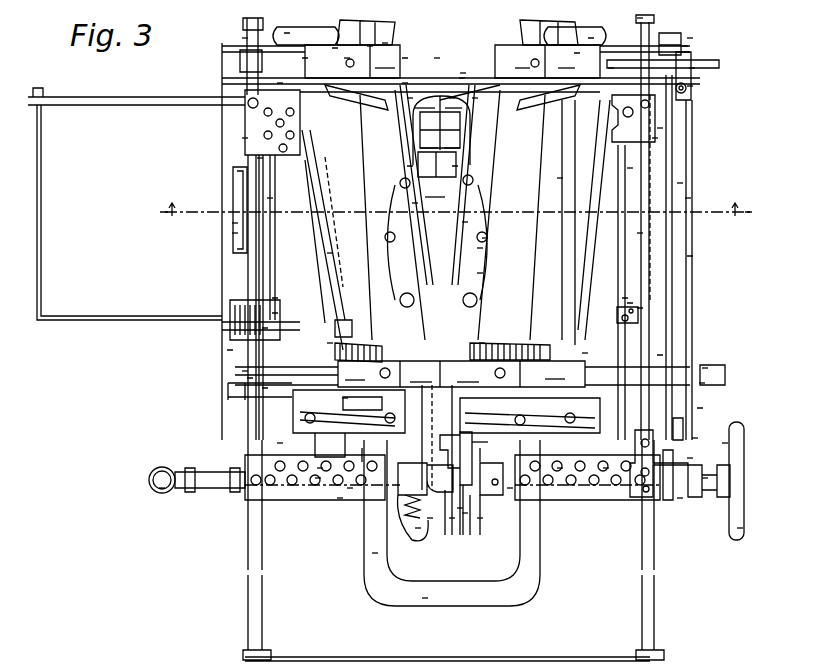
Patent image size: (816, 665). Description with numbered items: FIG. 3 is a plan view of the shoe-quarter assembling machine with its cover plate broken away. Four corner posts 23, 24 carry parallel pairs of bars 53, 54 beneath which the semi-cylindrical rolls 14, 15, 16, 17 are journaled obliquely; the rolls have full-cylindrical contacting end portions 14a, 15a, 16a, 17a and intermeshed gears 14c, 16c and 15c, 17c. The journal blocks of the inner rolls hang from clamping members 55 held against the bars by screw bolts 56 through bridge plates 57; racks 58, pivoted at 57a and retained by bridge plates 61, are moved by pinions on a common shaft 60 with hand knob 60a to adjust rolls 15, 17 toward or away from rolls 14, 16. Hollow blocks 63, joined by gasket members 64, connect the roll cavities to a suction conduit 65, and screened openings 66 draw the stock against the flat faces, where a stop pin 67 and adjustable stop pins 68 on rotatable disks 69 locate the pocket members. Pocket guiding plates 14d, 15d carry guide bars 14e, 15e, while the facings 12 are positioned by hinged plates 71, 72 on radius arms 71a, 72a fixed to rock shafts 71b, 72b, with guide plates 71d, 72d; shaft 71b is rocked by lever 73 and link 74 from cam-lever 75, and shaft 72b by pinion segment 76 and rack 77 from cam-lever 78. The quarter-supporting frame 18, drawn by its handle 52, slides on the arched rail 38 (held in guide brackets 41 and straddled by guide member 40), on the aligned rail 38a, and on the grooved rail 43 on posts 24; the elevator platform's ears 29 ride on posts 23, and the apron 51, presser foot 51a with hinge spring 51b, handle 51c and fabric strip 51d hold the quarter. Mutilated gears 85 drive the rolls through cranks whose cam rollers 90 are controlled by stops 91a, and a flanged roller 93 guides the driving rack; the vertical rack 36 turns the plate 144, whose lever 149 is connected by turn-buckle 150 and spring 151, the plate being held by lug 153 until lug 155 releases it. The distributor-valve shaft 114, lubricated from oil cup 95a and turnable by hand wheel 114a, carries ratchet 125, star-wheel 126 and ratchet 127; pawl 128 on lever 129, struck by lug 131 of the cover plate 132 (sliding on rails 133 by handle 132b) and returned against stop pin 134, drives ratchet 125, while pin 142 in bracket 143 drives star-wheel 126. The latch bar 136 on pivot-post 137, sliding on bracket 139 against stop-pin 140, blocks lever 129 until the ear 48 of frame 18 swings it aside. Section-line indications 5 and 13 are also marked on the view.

The section line 5 is at (450, 211).
The facings 12 is at (367, 458).
The section line 13 is at (487, 458).
The pocket manipulating roll 14 is at (410, 100).
The full-cylindrical end portion 14a is at (405, 85).
The gear 14c is at (422, 376).
The pocket supporting and guiding plate 14d is at (437, 60).
The guide bar 14e is at (415, 205).
The pocket manipulating roll 15 is at (475, 100).
The full-cylindrical end portion 15a is at (482, 345).
The gear 15c is at (469, 376).
The pocket supporting and guiding plate 15d is at (463, 75).
The guide bar 15e is at (465, 224).
The roll 16 is at (260, 160).
The full-cylindrical end portion 16a is at (290, 352).
The gear 16c is at (357, 374).
The roll 17 is at (688, 200).
The full-cylindrical end portion 17a is at (585, 355).
The gear 17c is at (557, 373).
The vertically movable frame 18 is at (630, 170).
The corner posts 23 is at (245, 373).
The corner posts 24 is at (685, 48).
The perforate ears 29 is at (230, 352).
The vertical rack 36 is at (350, 490).
The arched rail 38 is at (275, 315).
The rail 38a is at (75, 320).
The guide member 40 is at (275, 300).
The guide brackets 41 is at (265, 330).
The grooved rail 43 is at (100, 100).
The ear or bracket 48 is at (660, 130).
The non-sticking shield or apron 51 is at (421, 119).
The presser foot 51a is at (437, 191).
The hinge spring 51b is at (460, 119).
The handle 51c is at (431, 138).
The strip of stiff fabric 51d is at (459, 138).
The handle 52 is at (235, 235).
The bars 53 is at (250, 380).
The bars 54 is at (245, 40).
The clamping members 55 is at (385, 45).
The screw bolts 56 is at (347, 60).
The bridge plates 57 is at (305, 60).
The pivot 57a is at (640, 20).
The rack 58 is at (720, 63).
The common shaft 60 is at (680, 185).
The hand knob 60a is at (690, 40).
The bridge plates 61 is at (692, 70).
The hollow blocks 63 is at (335, 50).
The gasket member 64 is at (370, 48).
The fluid conduit 65 is at (286, 35).
The screened openings 66 is at (480, 275).
The guide or stop pin 67 is at (410, 168).
The adjustable stop pins 68 is at (480, 250).
The rotatable disks 69 is at (485, 240).
The hinged plate 71 is at (235, 225).
The variable-length radius arm 71a is at (245, 140).
The rock shaft 71b is at (330, 255).
The guide plate 71d is at (270, 200).
The hinged plate 72 is at (611, 70).
The variable-length radius arm 72a is at (655, 140).
The rock shaft 72b is at (560, 180).
The guide plate 72d is at (640, 235).
The rocking lever 73 is at (280, 85).
The link 74 is at (385, 61).
The cam-lever 75 is at (462, 80).
The pinion segment 76 is at (565, 61).
The rack 77 is at (523, 61).
The cam-lever 78 is at (452, 100).
The mutilated gear 85 is at (345, 400).
The cam roller 90 is at (560, 470).
The stop 91a is at (280, 445).
The flanged guide-roller 93 is at (479, 436).
The oil cup 95a is at (162, 490).
The axial shaft 114 is at (510, 490).
The hand wheel 114a is at (740, 530).
The ratchet 125 is at (680, 500).
The star-wheel 126 is at (340, 500).
The second ratchet 127 is at (480, 520).
The pawl 128 is at (705, 480).
The lever 129 is at (695, 440).
The lug 131 is at (690, 460).
The cover or guard plate 132 is at (606, 470).
The handle 132b is at (425, 600).
The rails 133 is at (250, 62).
The stop pin 134 is at (725, 445).
The horizontal latch bar 136 is at (700, 410).
The vertical pivot-post 137 is at (690, 88).
The bracket 139 is at (705, 370).
The stop-pin 140 is at (702, 385).
The pin 142 is at (318, 480).
The bracket 143 is at (320, 470).
The plate 144 is at (465, 515).
The lever 149 is at (430, 520).
The turn-buckle 150 is at (418, 530).
The spring 151 is at (375, 555).
The lug 153 is at (460, 510).
The lug 155 is at (452, 520).